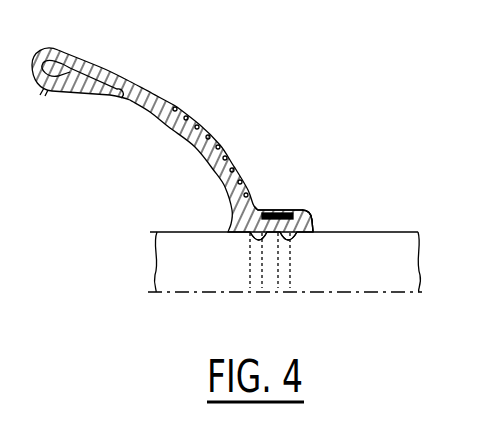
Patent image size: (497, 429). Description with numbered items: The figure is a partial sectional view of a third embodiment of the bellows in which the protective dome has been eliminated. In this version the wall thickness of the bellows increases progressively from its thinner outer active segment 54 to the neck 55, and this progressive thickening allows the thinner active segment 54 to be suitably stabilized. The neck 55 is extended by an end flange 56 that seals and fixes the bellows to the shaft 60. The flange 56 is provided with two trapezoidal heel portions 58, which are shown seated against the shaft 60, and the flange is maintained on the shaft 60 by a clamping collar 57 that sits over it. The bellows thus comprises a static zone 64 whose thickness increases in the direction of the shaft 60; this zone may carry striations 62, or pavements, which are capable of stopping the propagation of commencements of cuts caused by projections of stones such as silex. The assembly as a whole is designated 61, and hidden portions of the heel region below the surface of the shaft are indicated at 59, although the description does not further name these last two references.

The outer active segment 54 is at (104, 64).
The neck 55 is at (259, 192).
The end flange 56 is at (314, 226).
The clamping collar 57 is at (287, 207).
The trapezoidal heel portions 58 is at (255, 235).
The lug shanks (hidden) 59 is at (281, 243).
The shaft 60 is at (395, 231).
The strap assembly 61 is at (231, 119).
The striations 62 is at (244, 162).
The static zone 64 is at (207, 127).